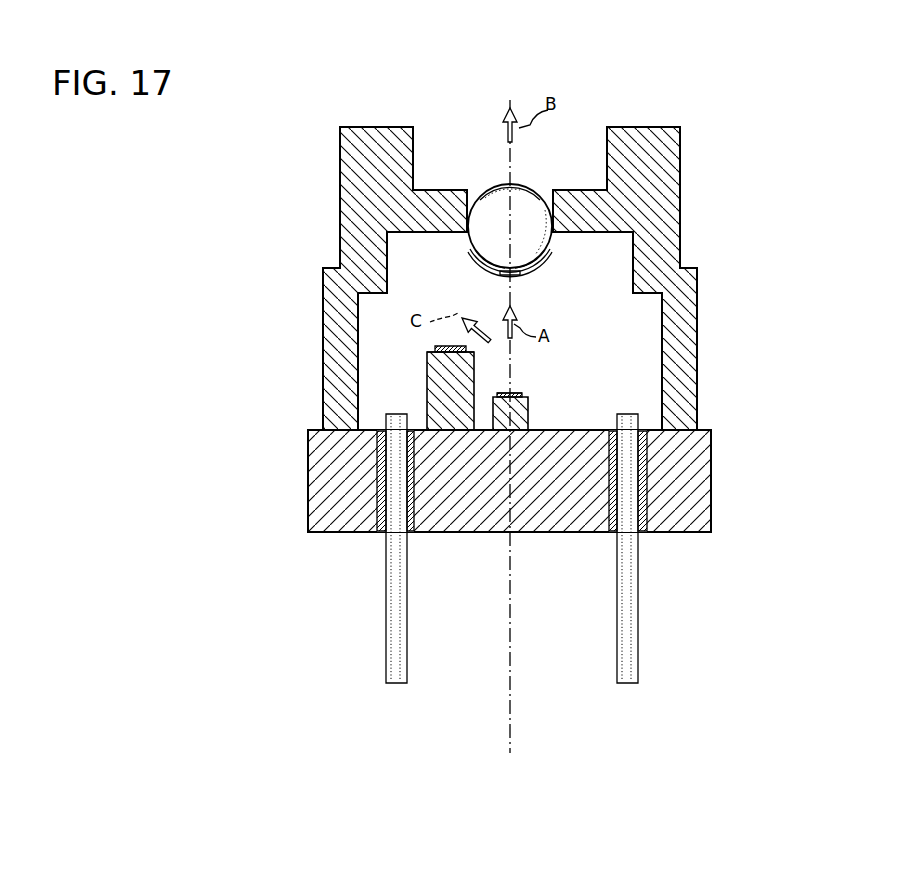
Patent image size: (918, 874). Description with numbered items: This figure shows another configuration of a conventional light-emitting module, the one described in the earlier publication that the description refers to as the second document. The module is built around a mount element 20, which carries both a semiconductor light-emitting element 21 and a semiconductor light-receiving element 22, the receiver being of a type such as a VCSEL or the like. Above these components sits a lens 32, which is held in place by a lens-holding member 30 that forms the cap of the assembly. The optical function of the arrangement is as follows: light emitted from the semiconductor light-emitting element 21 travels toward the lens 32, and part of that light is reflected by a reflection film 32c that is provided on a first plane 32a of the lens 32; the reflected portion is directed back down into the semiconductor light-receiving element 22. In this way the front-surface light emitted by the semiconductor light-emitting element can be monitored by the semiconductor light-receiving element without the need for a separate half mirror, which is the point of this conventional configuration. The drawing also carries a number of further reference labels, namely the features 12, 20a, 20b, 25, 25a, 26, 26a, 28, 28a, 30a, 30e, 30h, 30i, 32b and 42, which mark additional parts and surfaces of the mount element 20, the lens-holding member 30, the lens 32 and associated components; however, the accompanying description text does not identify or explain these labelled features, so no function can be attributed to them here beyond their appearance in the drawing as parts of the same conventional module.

The optical axis 12 is at (513, 733).
The mount element 20 is at (542, 449).
The upper surface of stem 20a is at (600, 430).
The peripheral portion of stem 20b is at (688, 420).
The semiconductor light-emitting element 21 is at (508, 392).
The semiconductor light-receiving element 22 is at (438, 345).
The submount 25 is at (492, 433).
The top surface of submount 25a is at (528, 395).
The heat sink block 26 is at (379, 388).
The mounting surface of heat sink 26a is at (430, 351).
The lead pin 28 is at (397, 685).
The sealing glass 28a is at (410, 534).
The lens-holding member 30 is at (506, 291).
The cap side wall portion 30a is at (284, 128).
The cap flange 30e is at (692, 434).
The inner wall surface of cap 30h is at (405, 237).
The lens seat step 30i is at (486, 190).
The lens 32 is at (517, 216).
The first plane 32a is at (493, 268).
The upper lens surface 32b is at (525, 188).
The reflection film 32c is at (552, 262).
The adhesive 42 is at (556, 236).